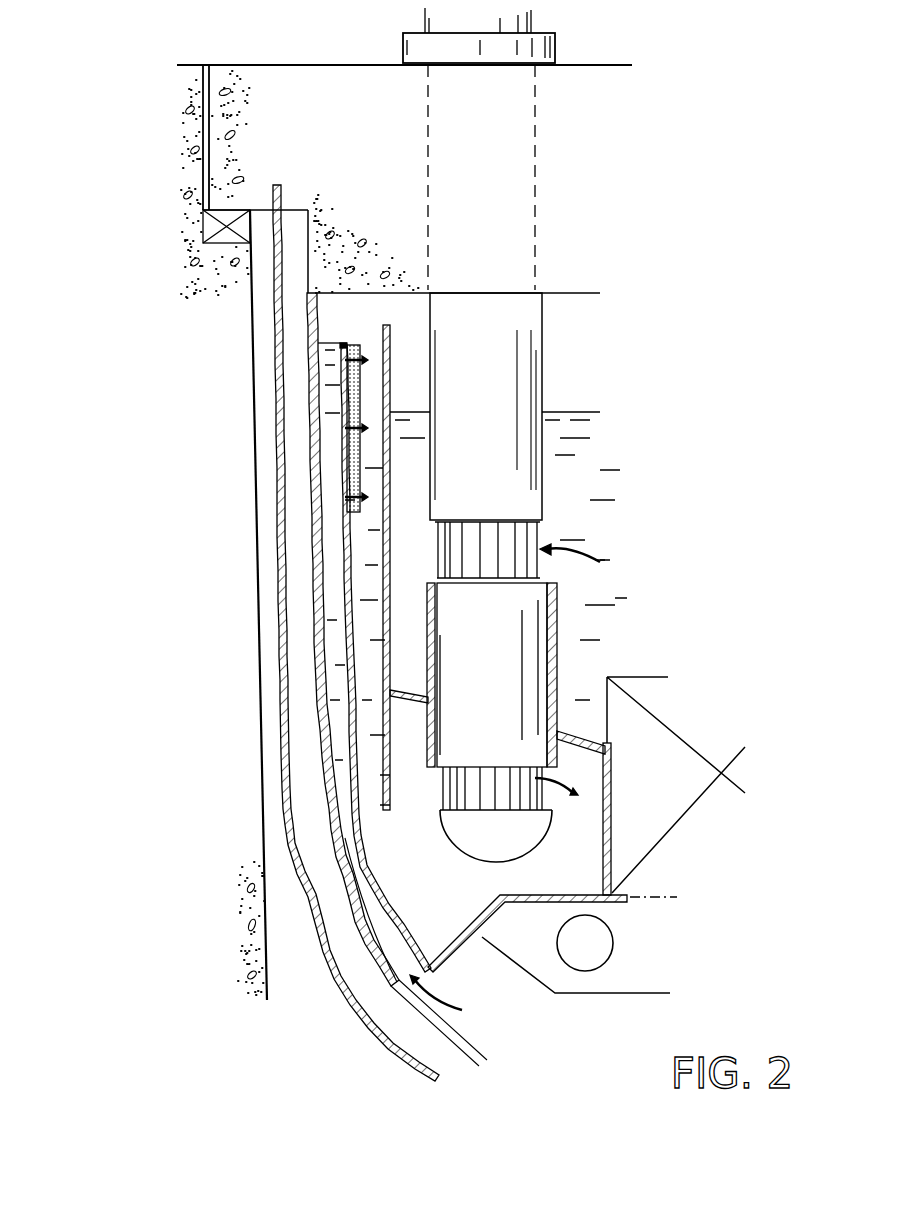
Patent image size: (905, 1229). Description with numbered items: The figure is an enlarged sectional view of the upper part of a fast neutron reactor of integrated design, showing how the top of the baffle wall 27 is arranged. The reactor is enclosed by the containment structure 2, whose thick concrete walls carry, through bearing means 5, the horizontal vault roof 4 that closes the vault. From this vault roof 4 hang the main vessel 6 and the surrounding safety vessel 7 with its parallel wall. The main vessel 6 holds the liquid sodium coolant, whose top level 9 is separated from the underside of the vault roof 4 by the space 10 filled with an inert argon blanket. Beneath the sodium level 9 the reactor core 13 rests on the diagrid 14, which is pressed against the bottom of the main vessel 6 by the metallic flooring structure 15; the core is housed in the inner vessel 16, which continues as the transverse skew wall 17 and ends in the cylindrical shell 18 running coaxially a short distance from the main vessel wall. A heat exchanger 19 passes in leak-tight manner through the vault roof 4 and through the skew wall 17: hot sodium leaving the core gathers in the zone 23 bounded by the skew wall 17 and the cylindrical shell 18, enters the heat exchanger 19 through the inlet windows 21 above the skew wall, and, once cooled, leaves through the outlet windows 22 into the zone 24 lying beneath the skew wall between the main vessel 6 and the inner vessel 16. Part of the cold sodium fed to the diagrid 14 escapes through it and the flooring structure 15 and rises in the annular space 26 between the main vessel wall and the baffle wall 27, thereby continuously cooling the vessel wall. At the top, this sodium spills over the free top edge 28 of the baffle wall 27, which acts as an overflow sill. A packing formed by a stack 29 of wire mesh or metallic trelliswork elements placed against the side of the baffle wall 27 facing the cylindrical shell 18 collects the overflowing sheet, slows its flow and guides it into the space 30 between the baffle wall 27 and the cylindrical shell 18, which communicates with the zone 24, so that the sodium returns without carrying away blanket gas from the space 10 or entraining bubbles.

The containment structure 2 is at (218, 977).
The vault roof 4 is at (226, 110).
The bearing means 5 is at (223, 239).
The main vessel 6 is at (316, 462).
The safety vessel 7 is at (285, 695).
The top level of liquid sodium 9 is at (578, 407).
The space filled with inert gas blanket 10 is at (372, 315).
The reactor core 13 is at (645, 695).
The diagrid 14 is at (632, 957).
The flooring structure 15 is at (446, 958).
The inner vessel 16 is at (605, 817).
The skew wall 17 is at (580, 737).
The cylindrical shell 18 is at (392, 492).
The heat exchanger 19 is at (515, 318).
The inlet windows 21 is at (538, 535).
The outlet windows 22 is at (460, 787).
The hot sodium collection zone 23 is at (682, 585).
The cold sodium zone 24 is at (557, 877).
The annular space 26 is at (337, 774).
The baffle wall 27 is at (343, 837).
The free top edge 28 is at (345, 343).
The stack of wire mesh elements 29 is at (368, 388).
The space between baffle wall and cylindrical shell 30 is at (362, 610).